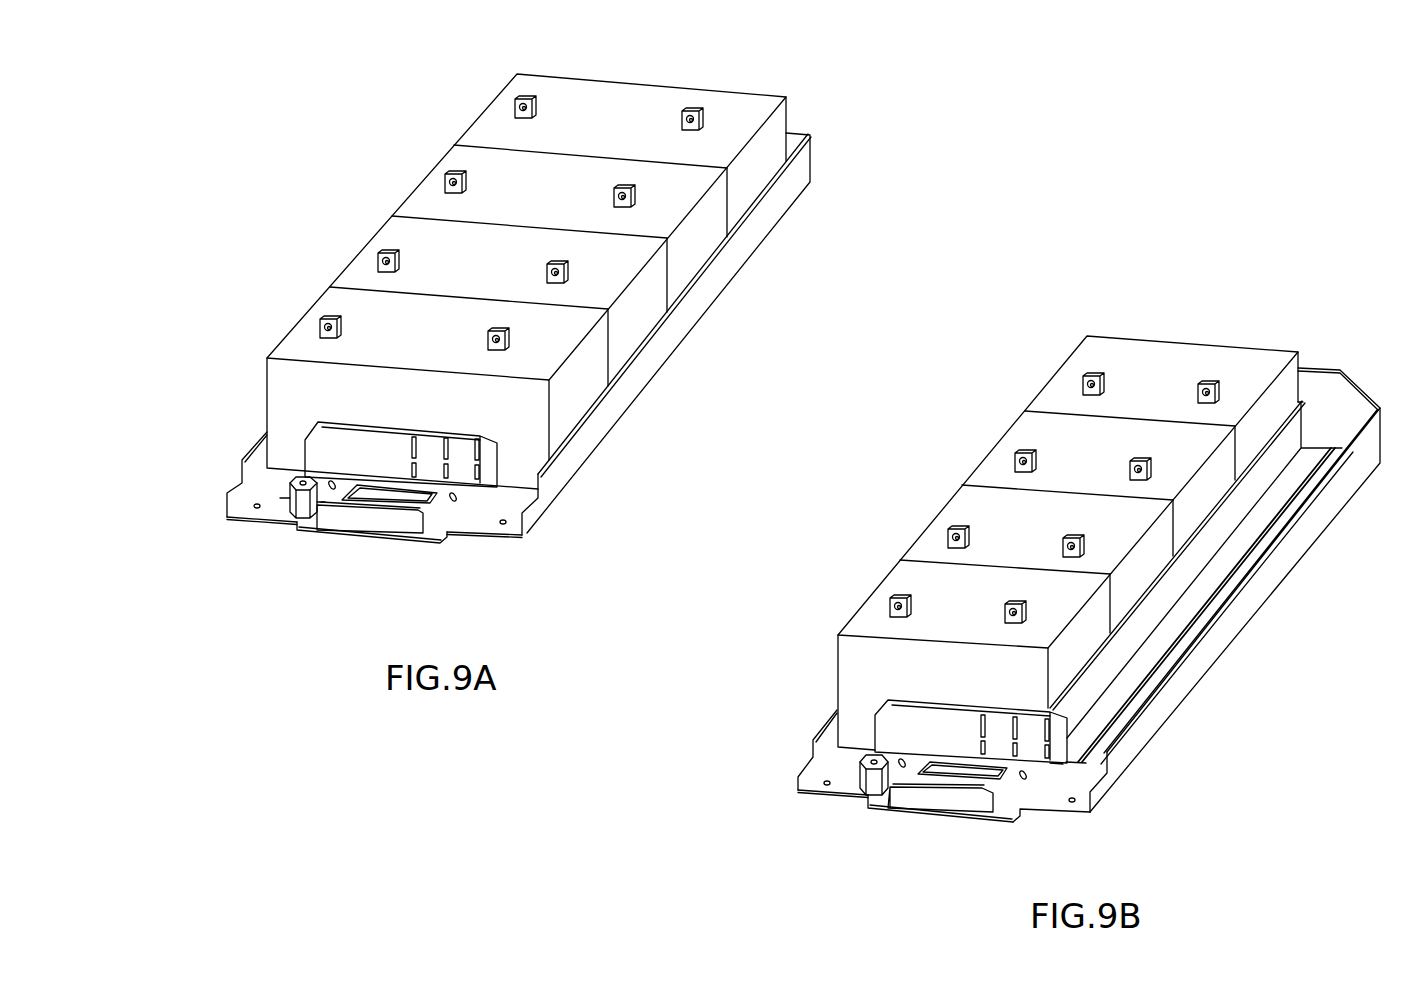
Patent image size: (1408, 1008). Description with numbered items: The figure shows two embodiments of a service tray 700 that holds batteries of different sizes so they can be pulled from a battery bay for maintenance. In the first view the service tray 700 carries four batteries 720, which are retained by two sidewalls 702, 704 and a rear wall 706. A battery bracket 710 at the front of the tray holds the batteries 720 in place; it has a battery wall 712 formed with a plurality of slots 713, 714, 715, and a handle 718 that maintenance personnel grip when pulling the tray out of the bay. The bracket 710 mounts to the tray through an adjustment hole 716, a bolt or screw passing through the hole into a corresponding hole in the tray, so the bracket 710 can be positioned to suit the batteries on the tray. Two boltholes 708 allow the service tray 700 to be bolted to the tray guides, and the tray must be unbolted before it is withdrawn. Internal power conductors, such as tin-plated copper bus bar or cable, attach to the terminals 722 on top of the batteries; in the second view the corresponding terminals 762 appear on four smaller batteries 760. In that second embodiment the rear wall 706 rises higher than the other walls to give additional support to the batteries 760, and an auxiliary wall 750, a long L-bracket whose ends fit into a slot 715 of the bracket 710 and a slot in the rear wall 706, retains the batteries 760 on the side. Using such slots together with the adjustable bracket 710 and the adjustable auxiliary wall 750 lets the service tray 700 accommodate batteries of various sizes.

In FIG. 9A, the service tray 700 is at (384, 546).
In FIG. 9B, the service tray 700 is at (958, 824).
In FIG. 9A, the sidewall 702 is at (256, 447).
In FIG. 9B, the sidewall 702 is at (824, 722).
In FIG. 9A, the sidewall 704 is at (521, 333).
In FIG. 9B, the sidewall 704 is at (1072, 591).
In FIG. 9A, the rear wall 706 is at (792, 133).
In FIG. 9B, the rear wall 706 is at (1330, 368).
In FIG. 9A, the boltholes 708 is at (257, 508).
In FIG. 9B, the boltholes 708 is at (827, 786).
In FIG. 9A, the battery bracket 710 is at (356, 425).
In FIG. 9B, the battery bracket 710 is at (924, 703).
In FIG. 9A, the battery wall 712 is at (357, 422).
In FIG. 9B, the battery wall 712 is at (927, 700).
In FIG. 9A, the slot 713 is at (414, 437).
In FIG. 9A, the slots 714 is at (446, 438).
In FIG. 9A, the slot 715 is at (477, 439).
In FIG. 9B, the slot 715 is at (1046, 719).
In FIG. 9A, the adjustment hole 716 is at (453, 502).
In FIG. 9B, the adjustment hole 716 is at (1023, 780).
In FIG. 9A, the handle 718 is at (382, 534).
In FIG. 9B, the handle 718 is at (951, 814).
In FIG. 9A, the batteries 720 is at (444, 156).
In FIG. 9A, the terminals 722 is at (447, 183).
In FIG. 9B, the auxiliary wall 750 is at (1160, 603).
In FIG. 9B, the batteries 760 is at (1010, 436).
In FIG. 9B, the fastener 762 is at (1012, 466).